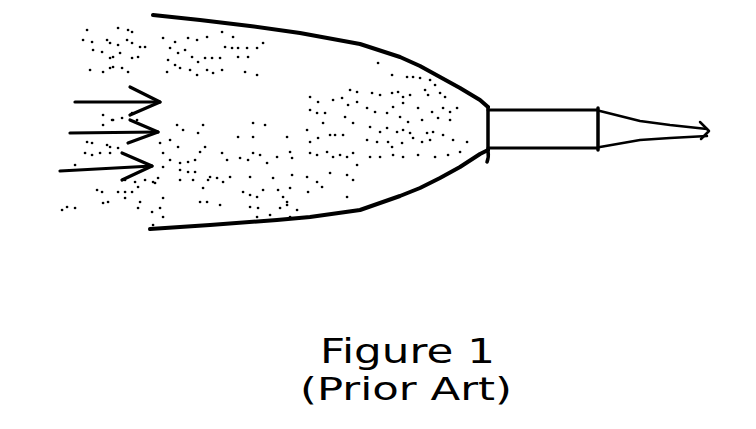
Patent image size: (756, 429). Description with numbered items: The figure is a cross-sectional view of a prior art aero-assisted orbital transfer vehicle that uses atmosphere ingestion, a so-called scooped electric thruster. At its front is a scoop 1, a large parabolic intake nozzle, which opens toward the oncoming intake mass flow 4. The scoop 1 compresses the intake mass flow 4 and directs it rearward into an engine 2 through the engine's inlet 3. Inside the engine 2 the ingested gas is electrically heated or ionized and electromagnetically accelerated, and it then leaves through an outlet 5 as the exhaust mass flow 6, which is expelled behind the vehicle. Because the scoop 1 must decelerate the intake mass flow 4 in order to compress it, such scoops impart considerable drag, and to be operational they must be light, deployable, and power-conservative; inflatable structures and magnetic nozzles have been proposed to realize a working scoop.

The scoop 1 is at (155, 229).
The engine 2 is at (540, 108).
The inlet 3 is at (487, 162).
The intake mass flow 4 is at (61, 142).
The outlet 5 is at (598, 150).
The exhaust mass flow 6 is at (652, 141).